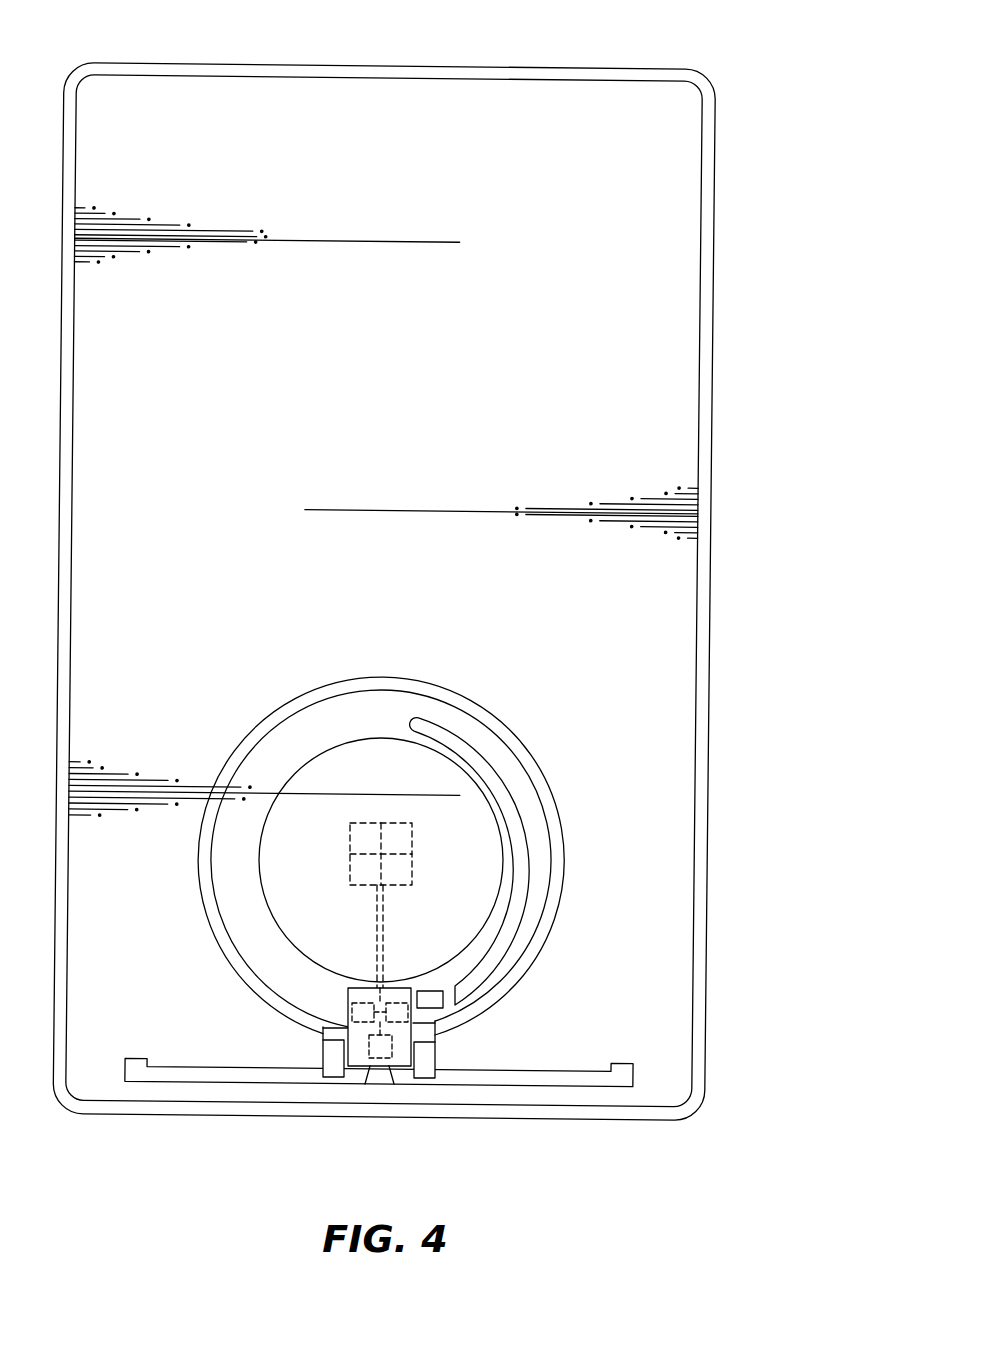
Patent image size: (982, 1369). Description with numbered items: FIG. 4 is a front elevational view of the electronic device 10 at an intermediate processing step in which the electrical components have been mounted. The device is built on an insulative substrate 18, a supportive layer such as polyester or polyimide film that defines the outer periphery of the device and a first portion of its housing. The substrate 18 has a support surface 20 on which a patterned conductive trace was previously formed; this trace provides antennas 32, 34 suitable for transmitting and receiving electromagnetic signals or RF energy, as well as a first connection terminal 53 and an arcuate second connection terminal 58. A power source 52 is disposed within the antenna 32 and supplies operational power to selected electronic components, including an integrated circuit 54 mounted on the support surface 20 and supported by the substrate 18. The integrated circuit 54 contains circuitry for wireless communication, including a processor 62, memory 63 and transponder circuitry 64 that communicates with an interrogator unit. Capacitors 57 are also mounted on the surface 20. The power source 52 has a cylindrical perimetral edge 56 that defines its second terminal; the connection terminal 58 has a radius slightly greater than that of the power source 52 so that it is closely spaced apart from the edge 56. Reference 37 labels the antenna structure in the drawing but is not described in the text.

The electronic device 10 is at (768, 149).
The substrate 18 is at (370, 63).
The support surface 20 is at (340, 369).
The antenna 32 is at (512, 717).
The antenna 34 is at (205, 1092).
The annular wall 37 is at (258, 732).
The power source 52 is at (343, 730).
The first connection terminal 53 is at (418, 843).
The integrated circuit 54 is at (380, 1080).
The perimetral edge 56 is at (258, 892).
The capacitors 57 is at (430, 990).
The second connection terminal 58 is at (514, 792).
The processor 62 is at (358, 998).
The memory 63 is at (402, 990).
The transponder circuitry 64 is at (357, 1070).